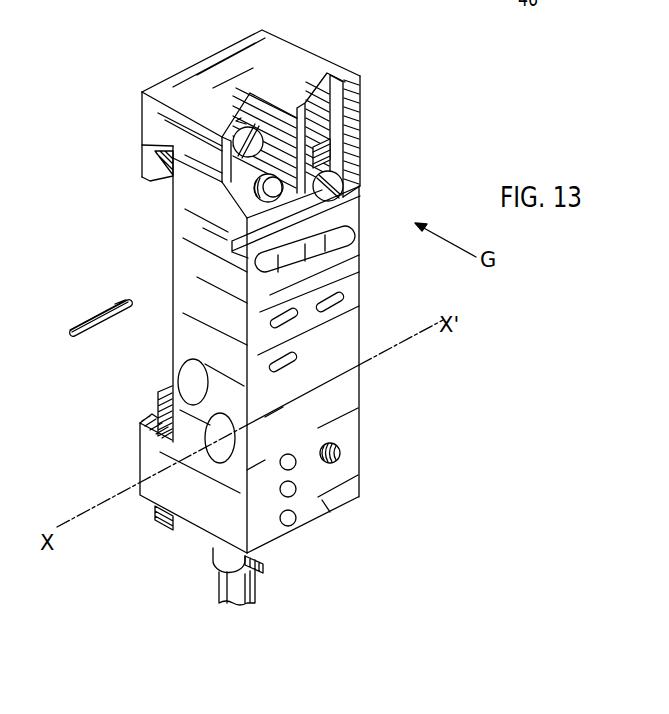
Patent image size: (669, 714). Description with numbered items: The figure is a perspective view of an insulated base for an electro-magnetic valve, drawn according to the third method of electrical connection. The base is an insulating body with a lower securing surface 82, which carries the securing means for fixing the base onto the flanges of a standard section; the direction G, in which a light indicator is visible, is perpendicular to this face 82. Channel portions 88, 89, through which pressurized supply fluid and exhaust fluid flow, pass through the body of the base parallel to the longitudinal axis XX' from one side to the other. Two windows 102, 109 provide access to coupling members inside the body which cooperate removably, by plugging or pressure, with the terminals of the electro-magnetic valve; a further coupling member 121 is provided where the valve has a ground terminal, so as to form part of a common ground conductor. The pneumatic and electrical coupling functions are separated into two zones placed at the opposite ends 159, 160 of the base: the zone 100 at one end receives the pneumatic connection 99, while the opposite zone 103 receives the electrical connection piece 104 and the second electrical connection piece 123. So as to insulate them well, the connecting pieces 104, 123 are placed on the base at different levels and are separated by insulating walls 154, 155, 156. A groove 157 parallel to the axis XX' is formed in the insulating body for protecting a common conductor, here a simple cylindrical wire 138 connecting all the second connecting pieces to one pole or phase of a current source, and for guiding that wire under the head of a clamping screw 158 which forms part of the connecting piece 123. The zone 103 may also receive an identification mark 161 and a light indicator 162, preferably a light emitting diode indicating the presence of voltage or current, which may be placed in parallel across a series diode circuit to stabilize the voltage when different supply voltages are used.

The end of the base 159 is at (198, 76).
The electrical connection piece 104 is at (245, 148).
The insulating wall 156 is at (193, 120).
The insulating wall 155 is at (362, 86).
The insulating wall 154 is at (340, 120).
The second electrical connection piece 123 is at (333, 166).
The clamping screw 158 is at (367, 184).
The zone 103 is at (355, 128).
The light indicator 162 is at (252, 190).
The groove 157 is at (232, 252).
The cylindrical wire 138 is at (93, 313).
The securing surface 82 is at (163, 344).
The channel portion 88 is at (193, 382).
The channel portion 89 is at (244, 440).
The identification mark 161 is at (315, 250).
The coupling member 121 is at (342, 300).
The window 102 is at (300, 316).
The window 109 is at (295, 362).
The zone 100 is at (402, 402).
The end of the base 160 is at (328, 516).
The pneumatic connection 99 is at (212, 558).